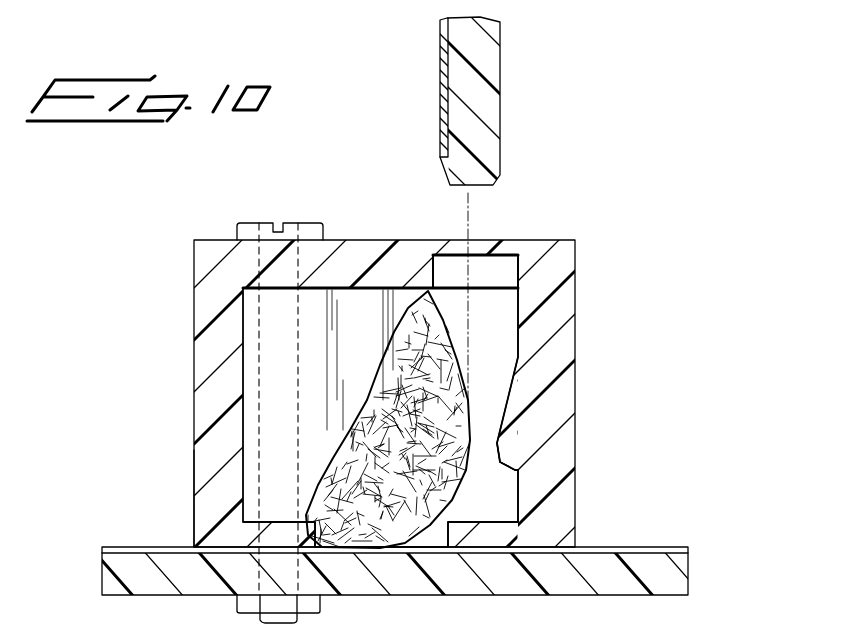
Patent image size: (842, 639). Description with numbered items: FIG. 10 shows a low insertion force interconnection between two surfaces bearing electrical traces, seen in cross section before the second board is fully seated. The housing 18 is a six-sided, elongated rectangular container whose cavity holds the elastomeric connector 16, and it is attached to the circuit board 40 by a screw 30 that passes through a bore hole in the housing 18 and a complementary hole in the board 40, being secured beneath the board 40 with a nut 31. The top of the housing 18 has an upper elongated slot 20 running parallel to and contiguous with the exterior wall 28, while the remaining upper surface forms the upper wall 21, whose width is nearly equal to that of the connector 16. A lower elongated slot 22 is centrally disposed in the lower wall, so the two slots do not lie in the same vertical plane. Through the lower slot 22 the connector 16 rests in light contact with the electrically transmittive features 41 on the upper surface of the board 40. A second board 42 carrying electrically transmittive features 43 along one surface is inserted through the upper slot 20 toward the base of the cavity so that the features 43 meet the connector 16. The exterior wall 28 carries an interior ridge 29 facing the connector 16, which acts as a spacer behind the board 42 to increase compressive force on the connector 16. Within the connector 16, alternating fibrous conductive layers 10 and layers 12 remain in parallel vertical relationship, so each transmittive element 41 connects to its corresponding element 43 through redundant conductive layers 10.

The fibrous conductive layers 10 is at (370, 550).
The alternating layers 12 is at (308, 458).
The elastomeric connector 16 is at (319, 379).
The housing 18 is at (183, 391).
The upper elongated slot 20 is at (488, 268).
The upper wall 21 is at (380, 240).
The lower elongated slot 22 is at (435, 528).
The exterior wall 28 is at (575, 327).
The interior ridge 29 is at (517, 468).
The screw 30 is at (258, 230).
The nut 31 is at (247, 606).
The circuit board 40 is at (688, 568).
The electrically transmittive features 41 is at (608, 547).
The second board 42 is at (488, 115).
The electrically transmittive features 43 is at (440, 71).